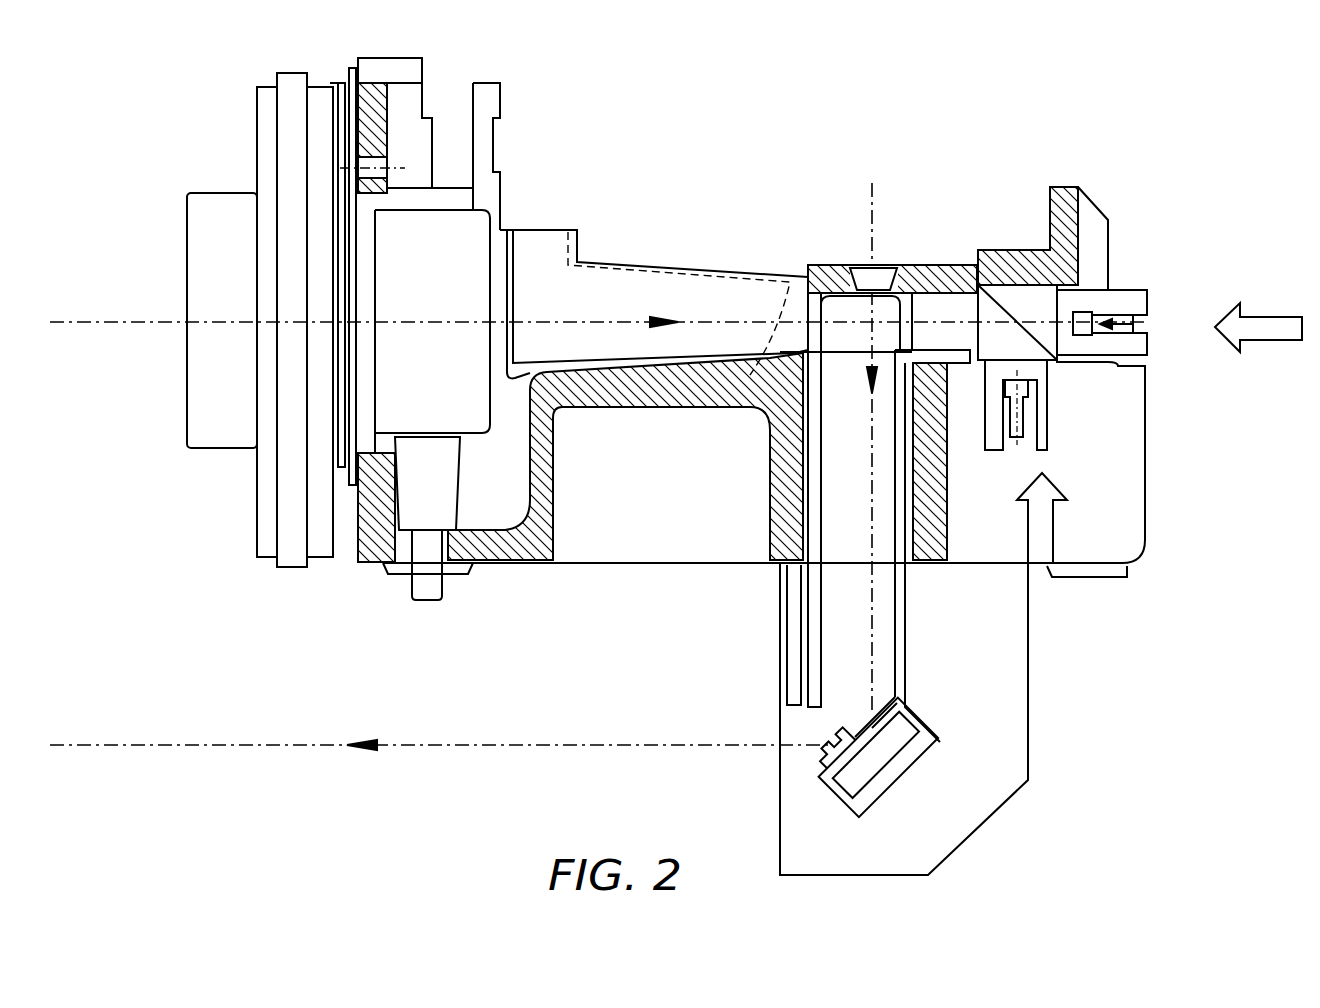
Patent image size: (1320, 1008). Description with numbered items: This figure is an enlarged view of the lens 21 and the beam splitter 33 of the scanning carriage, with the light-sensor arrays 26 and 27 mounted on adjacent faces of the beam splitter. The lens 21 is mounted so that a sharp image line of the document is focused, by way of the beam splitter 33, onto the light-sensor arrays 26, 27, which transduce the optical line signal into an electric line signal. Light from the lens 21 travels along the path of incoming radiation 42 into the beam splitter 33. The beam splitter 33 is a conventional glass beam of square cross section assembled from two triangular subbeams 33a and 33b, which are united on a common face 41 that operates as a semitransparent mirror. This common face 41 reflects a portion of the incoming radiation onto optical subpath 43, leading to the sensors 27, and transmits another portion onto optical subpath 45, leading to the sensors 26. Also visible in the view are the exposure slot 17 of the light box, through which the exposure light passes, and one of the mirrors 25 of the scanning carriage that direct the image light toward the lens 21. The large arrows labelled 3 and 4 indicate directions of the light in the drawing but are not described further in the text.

The lens 21 is at (465, 233).
The path of incoming radiation 42 is at (713, 322).
The exposure slot 17 is at (858, 282).
The triangular subbeam 33b is at (947, 283).
The beam splitter 33 is at (1003, 280).
The optical subpath 45 is at (1042, 318).
The common face 41 is at (1040, 307).
The triangular subbeam 33a is at (1058, 300).
The light-sensor array 26 is at (1130, 327).
The incident light direction 3 is at (1273, 330).
The optical subpath 43 is at (1050, 372).
The light-sensor array 27 is at (1040, 408).
The reflected light direction 4 is at (1042, 540).
The mirror 25 is at (847, 785).